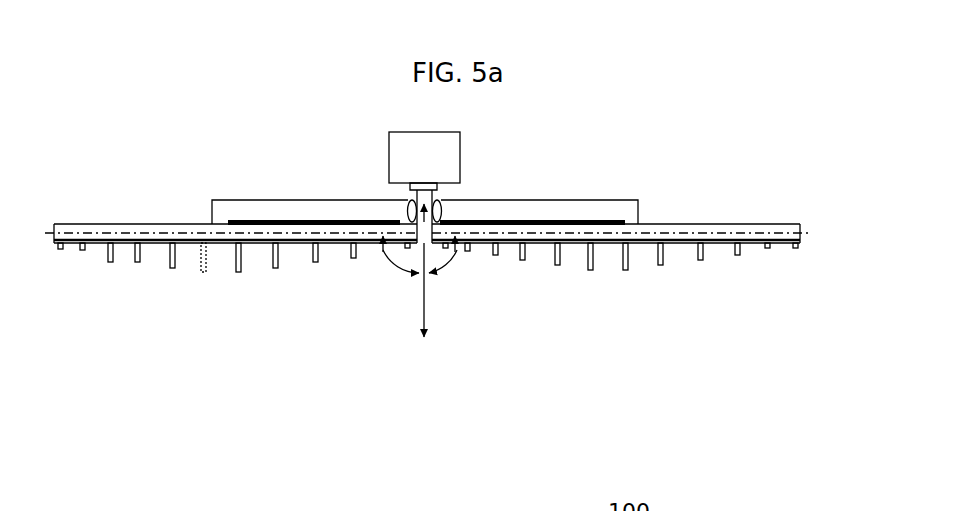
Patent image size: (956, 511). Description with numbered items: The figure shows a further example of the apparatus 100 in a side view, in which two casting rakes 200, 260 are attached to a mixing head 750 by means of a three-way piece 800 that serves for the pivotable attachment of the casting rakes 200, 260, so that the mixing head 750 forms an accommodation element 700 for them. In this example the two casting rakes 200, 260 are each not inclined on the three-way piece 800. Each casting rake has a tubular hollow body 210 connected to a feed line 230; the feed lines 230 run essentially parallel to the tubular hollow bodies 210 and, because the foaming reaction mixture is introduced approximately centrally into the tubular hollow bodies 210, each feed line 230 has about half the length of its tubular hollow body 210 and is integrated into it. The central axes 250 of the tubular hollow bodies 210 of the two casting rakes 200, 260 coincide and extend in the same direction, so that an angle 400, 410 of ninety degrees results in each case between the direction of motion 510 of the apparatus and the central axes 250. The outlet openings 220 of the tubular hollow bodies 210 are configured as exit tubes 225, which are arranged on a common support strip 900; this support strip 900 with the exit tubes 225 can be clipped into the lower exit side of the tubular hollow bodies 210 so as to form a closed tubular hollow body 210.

The apparatus 100 is at (549, 82).
The casting rake 200 is at (622, 180).
The tubular hollow body 210 is at (108, 224).
The outlet opening 220 is at (171, 264).
The exit tube 225 is at (215, 270).
The feed line 230 is at (268, 200).
The central axis 250 is at (188, 232).
The casting rake 260 is at (243, 185).
The angle 400 is at (450, 262).
The angle 410 is at (390, 262).
The direction of motion 510 is at (426, 320).
The accommodation element 700 is at (388, 148).
The mixing head 750 is at (455, 152).
The 3-way piece 800 is at (447, 205).
The support strip 900 is at (122, 245).